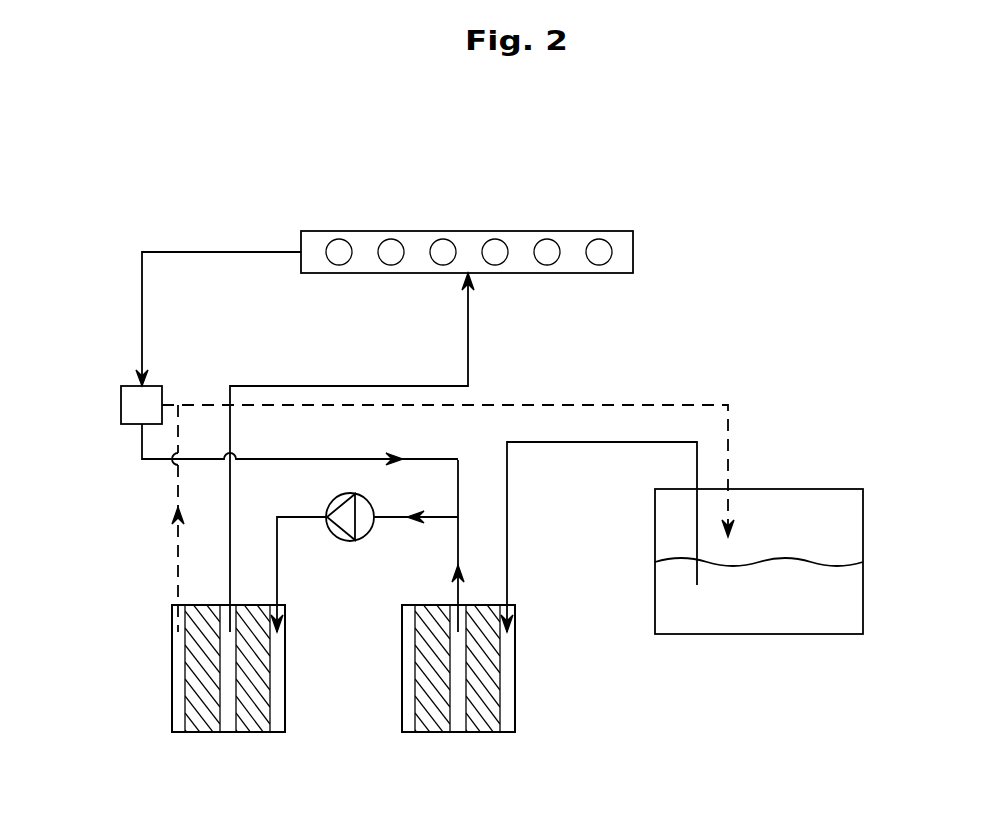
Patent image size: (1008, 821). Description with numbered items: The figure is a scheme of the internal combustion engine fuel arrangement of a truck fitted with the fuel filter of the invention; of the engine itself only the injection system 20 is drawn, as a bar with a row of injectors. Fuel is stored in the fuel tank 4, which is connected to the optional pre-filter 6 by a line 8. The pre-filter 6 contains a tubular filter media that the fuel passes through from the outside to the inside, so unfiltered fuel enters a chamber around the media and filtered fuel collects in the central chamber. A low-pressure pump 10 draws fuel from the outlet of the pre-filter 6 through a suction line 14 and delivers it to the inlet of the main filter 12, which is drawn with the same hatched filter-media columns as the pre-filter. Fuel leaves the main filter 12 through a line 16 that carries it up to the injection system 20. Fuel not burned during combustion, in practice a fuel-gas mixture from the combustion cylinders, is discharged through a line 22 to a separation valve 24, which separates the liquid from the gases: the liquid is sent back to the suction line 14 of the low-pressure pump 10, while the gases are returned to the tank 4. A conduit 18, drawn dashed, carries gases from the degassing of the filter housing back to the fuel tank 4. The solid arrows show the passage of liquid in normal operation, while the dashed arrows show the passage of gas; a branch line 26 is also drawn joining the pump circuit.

The fuel tank 4 is at (794, 517).
The pre-filter 6 is at (542, 682).
The line 8 is at (557, 445).
The low-pressure pump 10 is at (345, 542).
The main filter 12 is at (298, 678).
The line 14 is at (430, 520).
The line 16 is at (230, 562).
The conduit 18 is at (178, 562).
The injection system 20 is at (617, 263).
The line 22 is at (142, 311).
The separation valve 24 is at (130, 400).
The bypass line 26 is at (355, 458).